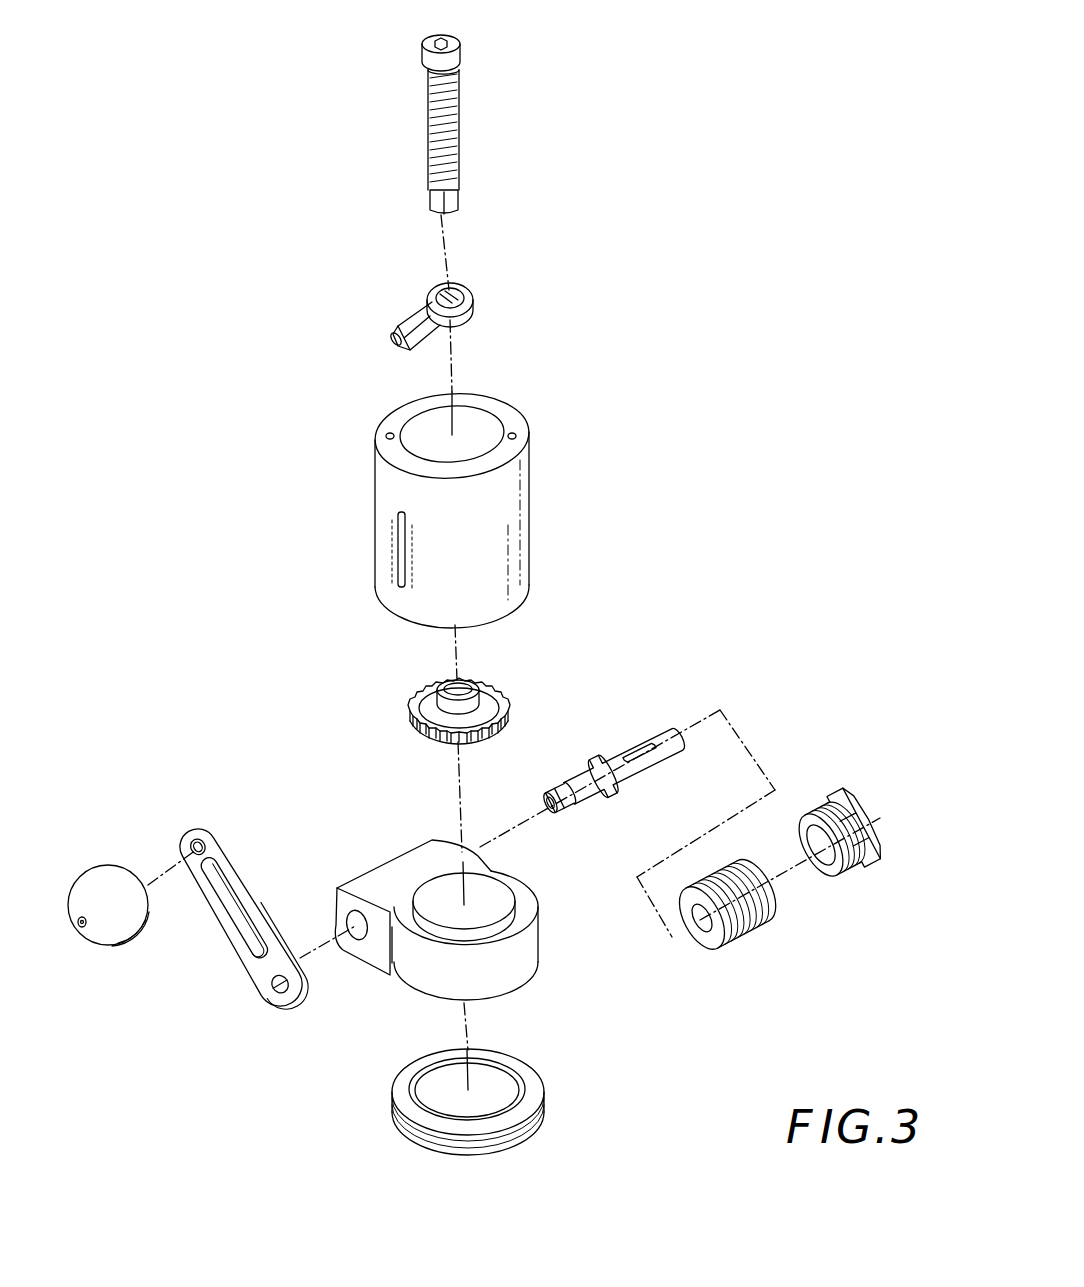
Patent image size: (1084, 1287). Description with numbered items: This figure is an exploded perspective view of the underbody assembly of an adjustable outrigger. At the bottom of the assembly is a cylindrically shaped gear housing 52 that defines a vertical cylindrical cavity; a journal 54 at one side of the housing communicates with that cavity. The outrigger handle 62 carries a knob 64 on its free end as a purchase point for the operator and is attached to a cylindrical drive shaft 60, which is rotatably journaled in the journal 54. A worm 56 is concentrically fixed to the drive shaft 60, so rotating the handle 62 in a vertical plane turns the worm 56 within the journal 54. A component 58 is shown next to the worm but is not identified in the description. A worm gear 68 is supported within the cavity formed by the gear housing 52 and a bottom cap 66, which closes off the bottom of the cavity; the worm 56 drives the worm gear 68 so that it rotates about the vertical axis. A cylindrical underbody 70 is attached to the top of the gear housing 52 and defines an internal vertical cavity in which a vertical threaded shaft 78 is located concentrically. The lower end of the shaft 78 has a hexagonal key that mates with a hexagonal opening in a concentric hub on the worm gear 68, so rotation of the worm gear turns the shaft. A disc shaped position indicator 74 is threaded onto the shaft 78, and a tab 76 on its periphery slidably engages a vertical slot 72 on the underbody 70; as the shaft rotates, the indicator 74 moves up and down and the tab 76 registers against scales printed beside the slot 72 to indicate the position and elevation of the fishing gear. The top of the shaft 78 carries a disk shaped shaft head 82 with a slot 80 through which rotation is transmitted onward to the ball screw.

The gear housing 52 is at (413, 931).
The journal 54 is at (364, 955).
The worm 56 is at (745, 922).
The nut 58 is at (838, 800).
The drive shaft 60 is at (655, 727).
The outrigger handle 62 is at (247, 972).
The knob 64 is at (110, 868).
The bottom cap 66 is at (537, 1077).
The worm gear 68 is at (506, 691).
The underbody 70 is at (458, 508).
The slot 72 is at (400, 537).
The position indicator 74 is at (428, 290).
The tab 76 is at (398, 330).
The vertical threaded shaft 78 is at (434, 113).
The slot 80 is at (462, 38).
The shaft head 82 is at (426, 62).